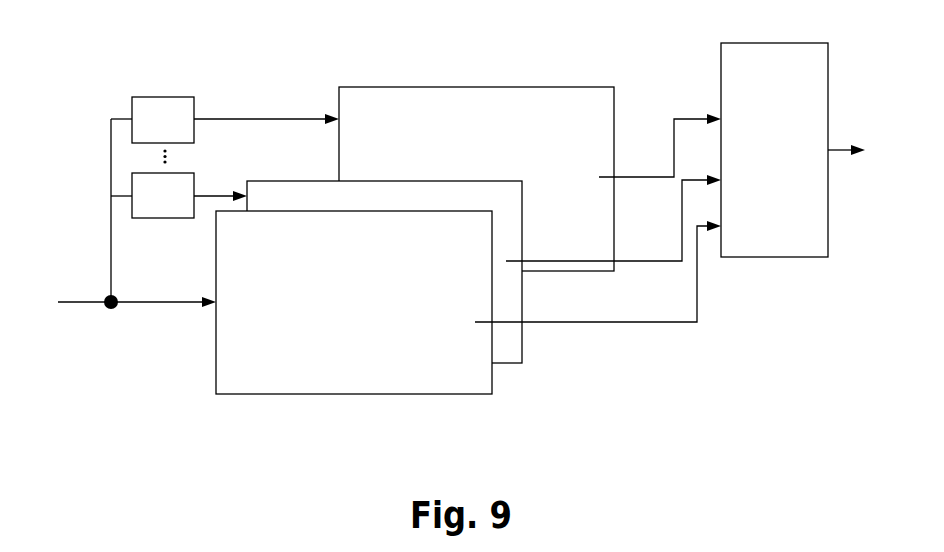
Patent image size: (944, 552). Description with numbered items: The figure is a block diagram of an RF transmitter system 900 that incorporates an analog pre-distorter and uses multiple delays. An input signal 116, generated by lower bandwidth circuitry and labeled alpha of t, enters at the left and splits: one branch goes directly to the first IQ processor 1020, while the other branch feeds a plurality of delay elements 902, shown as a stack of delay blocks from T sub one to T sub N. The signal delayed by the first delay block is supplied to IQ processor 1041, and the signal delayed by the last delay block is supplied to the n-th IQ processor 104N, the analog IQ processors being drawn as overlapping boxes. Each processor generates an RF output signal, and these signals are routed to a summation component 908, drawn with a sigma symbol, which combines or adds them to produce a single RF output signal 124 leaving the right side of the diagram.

The RF transmitter system 900 is at (257, 466).
The delay elements 902 is at (155, 60).
The input signal 116 is at (99, 299).
The n-th IQ processor 104N is at (598, 271).
The IQ processor 1041 is at (507, 363).
The first IQ processor 1020 is at (369, 325).
The summation component 908 is at (759, 43).
The RF output signal 124 is at (833, 153).